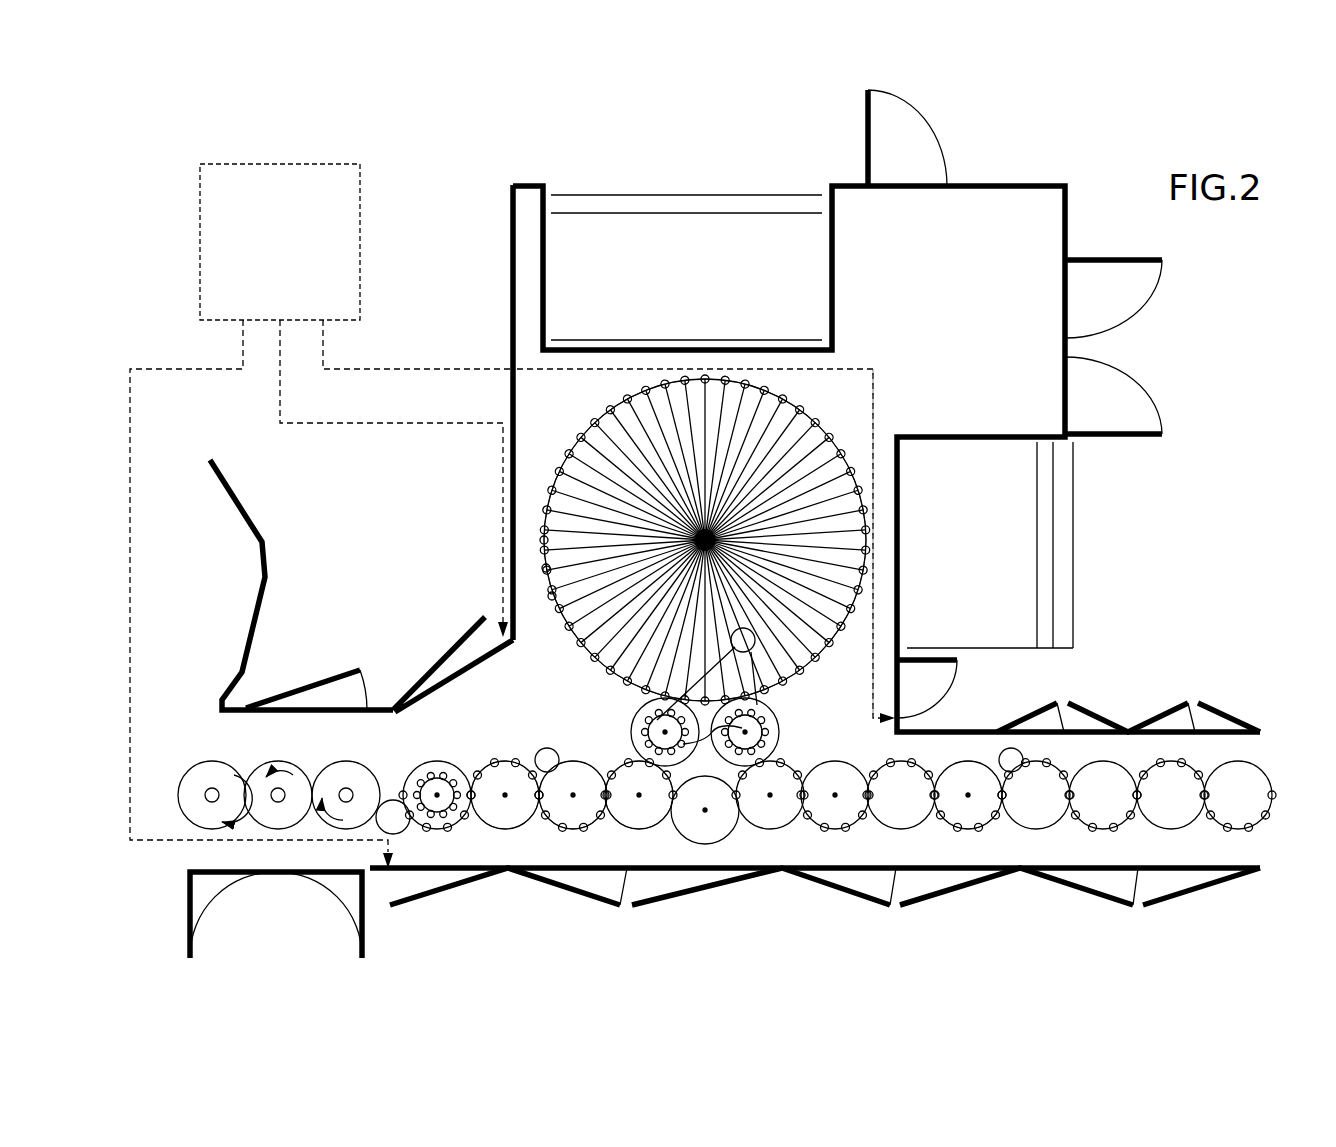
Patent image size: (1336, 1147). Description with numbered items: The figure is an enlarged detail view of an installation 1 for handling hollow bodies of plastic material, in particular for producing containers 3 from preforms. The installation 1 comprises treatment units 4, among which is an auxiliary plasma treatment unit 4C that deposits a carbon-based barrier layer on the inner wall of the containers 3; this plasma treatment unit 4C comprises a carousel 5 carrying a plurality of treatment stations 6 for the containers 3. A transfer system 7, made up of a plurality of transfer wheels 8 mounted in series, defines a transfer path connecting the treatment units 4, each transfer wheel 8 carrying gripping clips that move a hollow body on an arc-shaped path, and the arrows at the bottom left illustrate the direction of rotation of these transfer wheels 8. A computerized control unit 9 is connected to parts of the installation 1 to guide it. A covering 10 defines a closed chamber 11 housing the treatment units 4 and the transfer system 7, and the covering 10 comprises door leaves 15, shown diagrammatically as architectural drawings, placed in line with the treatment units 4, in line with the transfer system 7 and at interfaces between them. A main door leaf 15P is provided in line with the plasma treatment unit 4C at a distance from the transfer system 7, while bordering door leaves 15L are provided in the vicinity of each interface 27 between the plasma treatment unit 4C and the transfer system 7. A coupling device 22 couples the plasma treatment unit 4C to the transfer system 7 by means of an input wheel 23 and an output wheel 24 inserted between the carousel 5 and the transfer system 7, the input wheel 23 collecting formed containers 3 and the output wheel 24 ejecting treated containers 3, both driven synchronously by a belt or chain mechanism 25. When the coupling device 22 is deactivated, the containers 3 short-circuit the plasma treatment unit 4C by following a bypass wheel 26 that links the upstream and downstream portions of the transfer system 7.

The installation 1 is at (1144, 609).
The containers 3 is at (449, 828).
The treatment units 4 is at (704, 540).
The plasma treatment unit 4C is at (803, 406).
The carousel 5 is at (597, 428).
The stations for treating the containers 6 is at (548, 604).
The transfer system 7 is at (971, 838).
The transfer wheels 8 is at (630, 826).
The computerized control unit 9 is at (283, 260).
The covering 10 is at (511, 326).
The closed chamber 11 is at (940, 324).
The door leaves 15 is at (315, 683).
The bordering door leaf 15L is at (921, 657).
The main door leaf 15P is at (867, 148).
The coupling device 22 is at (789, 718).
The input wheel 23 is at (784, 742).
The output wheel 24 is at (631, 724).
The mechanism for synchronous driving 25 is at (763, 699).
The bypass wheel 26 is at (683, 838).
The interface 27 is at (874, 738).